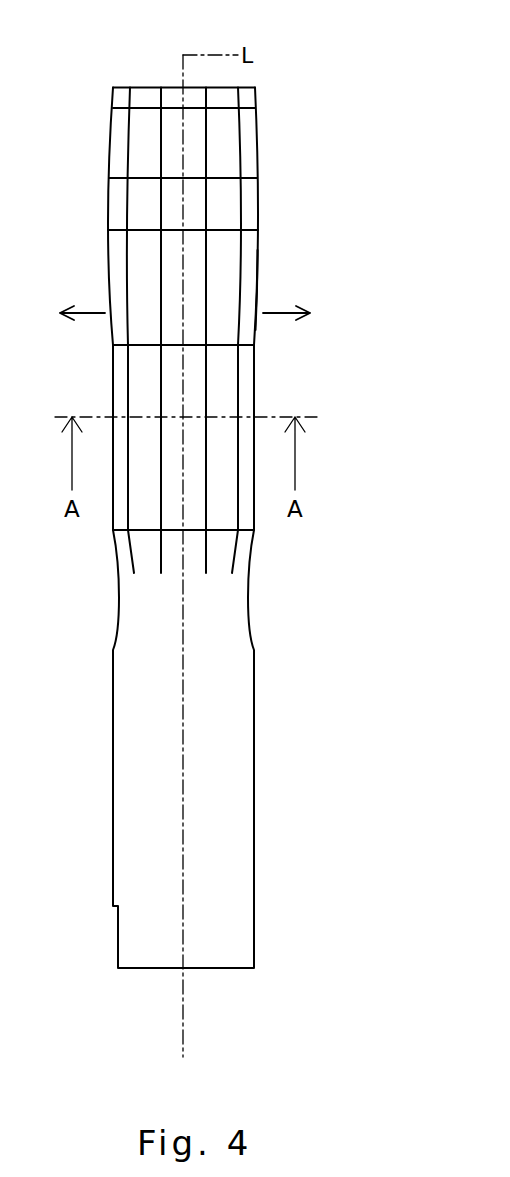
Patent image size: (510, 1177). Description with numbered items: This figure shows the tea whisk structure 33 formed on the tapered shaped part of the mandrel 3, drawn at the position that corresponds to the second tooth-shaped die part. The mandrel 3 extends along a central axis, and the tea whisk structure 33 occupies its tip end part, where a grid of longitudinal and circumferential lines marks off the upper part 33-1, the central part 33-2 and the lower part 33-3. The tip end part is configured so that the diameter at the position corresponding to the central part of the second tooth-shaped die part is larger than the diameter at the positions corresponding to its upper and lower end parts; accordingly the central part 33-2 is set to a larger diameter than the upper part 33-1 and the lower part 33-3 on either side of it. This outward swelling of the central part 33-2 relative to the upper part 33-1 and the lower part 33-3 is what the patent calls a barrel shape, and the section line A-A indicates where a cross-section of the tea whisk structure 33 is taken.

The mandrel 3 is at (72, 85).
The tea whisk structure 33 is at (227, 258).
The upper part 33-1 is at (253, 130).
The central part 33-2 is at (258, 203).
The lower part 33-3 is at (258, 292).